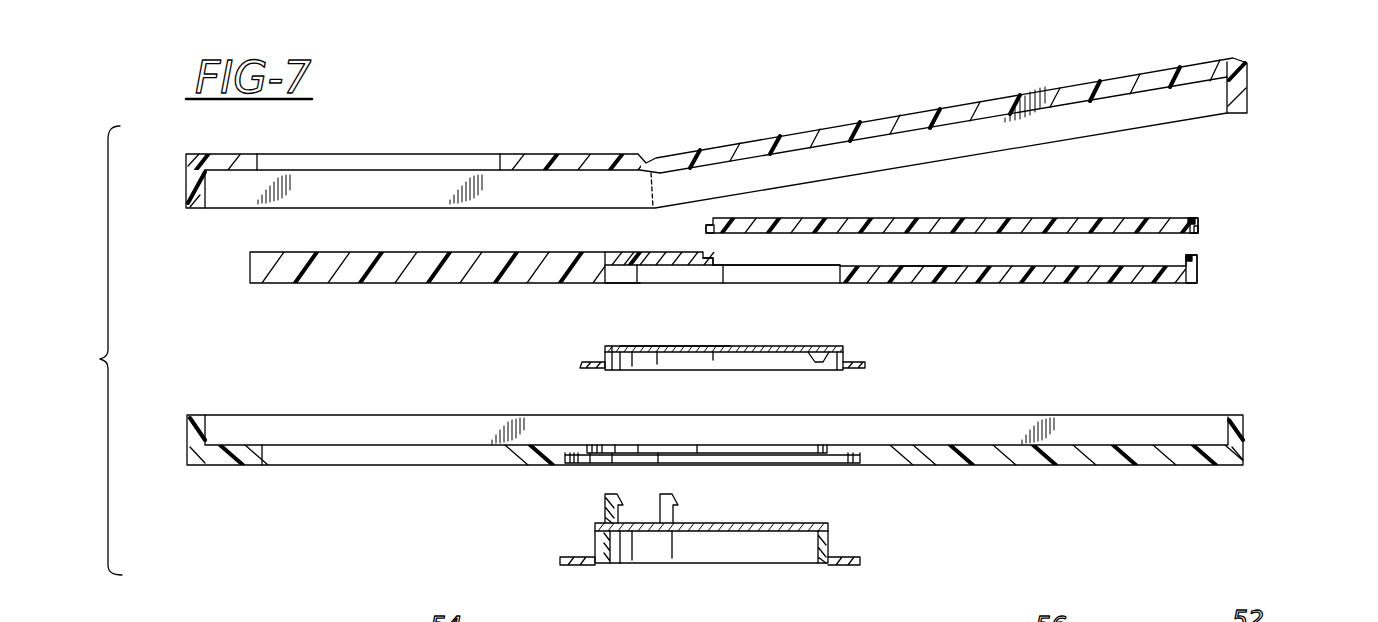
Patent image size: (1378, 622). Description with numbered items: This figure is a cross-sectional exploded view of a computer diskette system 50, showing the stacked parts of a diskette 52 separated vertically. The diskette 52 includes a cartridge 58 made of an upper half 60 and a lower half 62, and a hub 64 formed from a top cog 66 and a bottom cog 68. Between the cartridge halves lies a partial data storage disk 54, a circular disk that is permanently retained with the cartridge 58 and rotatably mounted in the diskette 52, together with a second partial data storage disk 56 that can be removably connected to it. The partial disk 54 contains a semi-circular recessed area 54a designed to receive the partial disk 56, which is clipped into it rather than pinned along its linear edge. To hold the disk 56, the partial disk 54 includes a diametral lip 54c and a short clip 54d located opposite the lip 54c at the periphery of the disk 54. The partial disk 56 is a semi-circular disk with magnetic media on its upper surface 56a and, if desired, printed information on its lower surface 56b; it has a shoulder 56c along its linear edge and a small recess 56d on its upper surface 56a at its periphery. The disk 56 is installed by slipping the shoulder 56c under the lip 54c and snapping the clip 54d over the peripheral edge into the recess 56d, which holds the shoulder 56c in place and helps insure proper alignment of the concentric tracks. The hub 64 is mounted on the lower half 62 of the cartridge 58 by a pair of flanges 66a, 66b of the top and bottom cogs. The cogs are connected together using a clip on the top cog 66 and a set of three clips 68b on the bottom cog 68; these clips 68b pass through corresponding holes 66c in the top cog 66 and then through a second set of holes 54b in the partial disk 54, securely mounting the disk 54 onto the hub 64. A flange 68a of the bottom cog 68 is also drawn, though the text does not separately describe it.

The computer diskette system 50 is at (90, 350).
The diskette 52 is at (716, 111).
The partial data storage disk 54 is at (764, 270).
The recessed area 54a is at (935, 254).
The holes 54b is at (620, 272).
The diametral lip 54c is at (730, 262).
The short clip 54d is at (1198, 262).
The second partial data storage disk 56 is at (1019, 200).
The upper surface 56a is at (998, 217).
The lower surface 56b is at (1197, 234).
The shoulder 56c is at (712, 219).
The recess 56d is at (1199, 218).
The cartridge 58 is at (1116, 497).
The upper half 60 is at (1030, 86).
The lower half 62 is at (1262, 430).
The hub 64 is at (678, 551).
The top cog 66 is at (760, 353).
The flange 66a is at (866, 364).
The clip 66b is at (830, 362).
The holes 66c is at (721, 346).
The bottom cog 68 is at (732, 551).
The carrier 68 flange 68a is at (566, 566).
The clips 68b is at (598, 542).